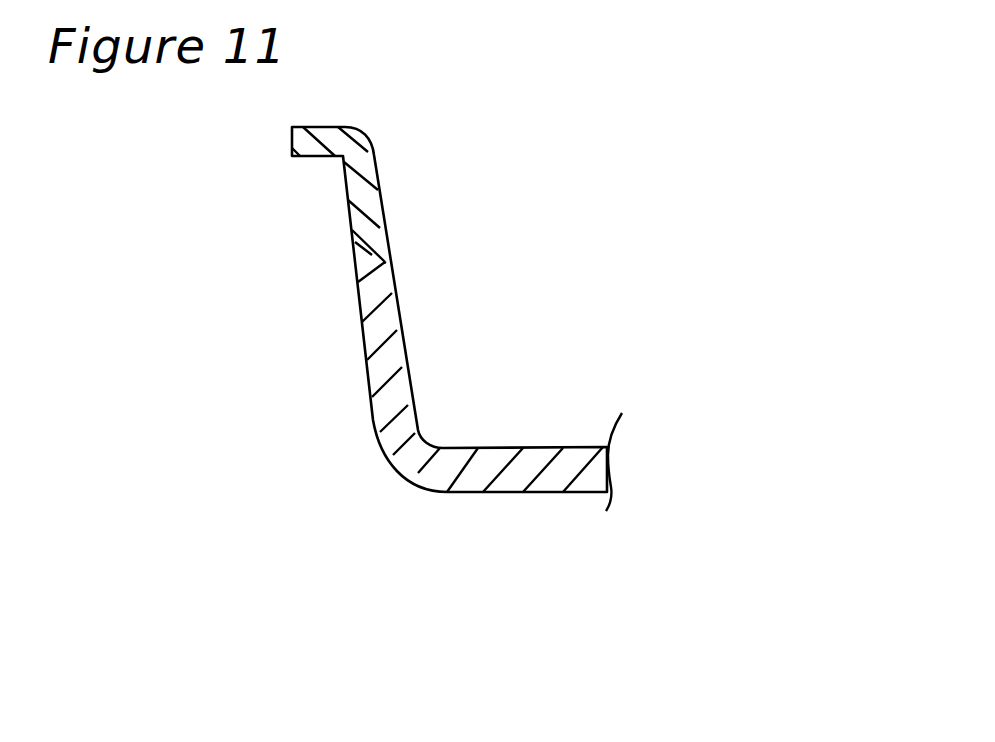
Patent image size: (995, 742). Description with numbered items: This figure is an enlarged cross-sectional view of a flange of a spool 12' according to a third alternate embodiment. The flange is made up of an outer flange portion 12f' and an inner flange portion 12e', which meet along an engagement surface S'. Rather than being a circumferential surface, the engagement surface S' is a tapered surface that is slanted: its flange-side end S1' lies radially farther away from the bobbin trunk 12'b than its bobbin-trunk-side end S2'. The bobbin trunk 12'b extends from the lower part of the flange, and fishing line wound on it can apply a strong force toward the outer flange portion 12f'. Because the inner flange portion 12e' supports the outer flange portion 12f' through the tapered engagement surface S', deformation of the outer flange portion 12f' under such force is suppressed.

The spool 12' is at (501, 308).
The outer flange portion 12f' is at (413, 191).
The inner flange portion 12e' is at (455, 383).
The bobbin trunk 12'b is at (551, 423).
The flange-side end S1' is at (311, 213).
The bobbin-trunk-side end S2' is at (469, 257).
The engagement surface S' is at (307, 317).